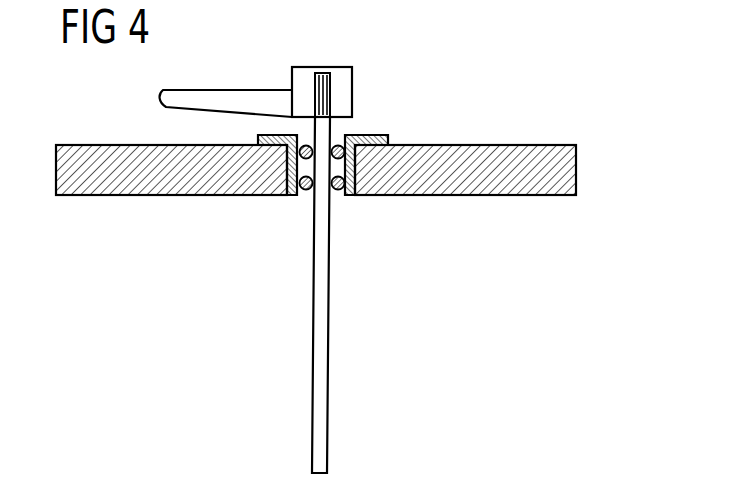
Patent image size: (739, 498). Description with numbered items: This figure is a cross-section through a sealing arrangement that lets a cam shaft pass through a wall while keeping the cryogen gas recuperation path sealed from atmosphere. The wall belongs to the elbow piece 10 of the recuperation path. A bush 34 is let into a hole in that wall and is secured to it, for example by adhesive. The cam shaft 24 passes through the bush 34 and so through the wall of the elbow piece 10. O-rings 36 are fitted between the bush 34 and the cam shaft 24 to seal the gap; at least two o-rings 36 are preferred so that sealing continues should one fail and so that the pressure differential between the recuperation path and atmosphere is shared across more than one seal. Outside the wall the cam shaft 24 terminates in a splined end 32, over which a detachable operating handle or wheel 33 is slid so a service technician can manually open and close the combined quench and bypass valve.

The elbow piece 10 is at (522, 144).
The cam shaft 24 is at (319, 298).
The splined end 32 is at (330, 90).
The operating handle or wheel 33 is at (162, 96).
The bush 34 is at (388, 135).
The o-rings 36 is at (335, 196).